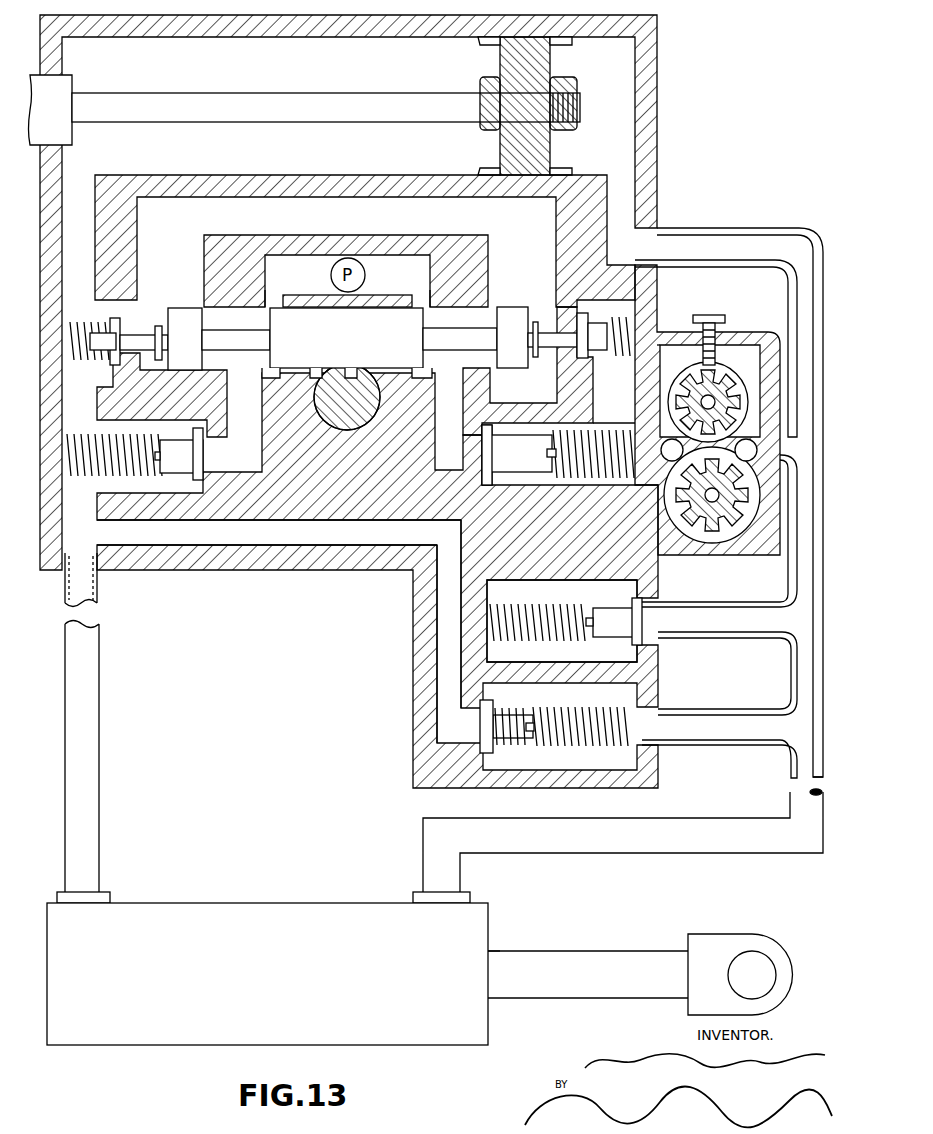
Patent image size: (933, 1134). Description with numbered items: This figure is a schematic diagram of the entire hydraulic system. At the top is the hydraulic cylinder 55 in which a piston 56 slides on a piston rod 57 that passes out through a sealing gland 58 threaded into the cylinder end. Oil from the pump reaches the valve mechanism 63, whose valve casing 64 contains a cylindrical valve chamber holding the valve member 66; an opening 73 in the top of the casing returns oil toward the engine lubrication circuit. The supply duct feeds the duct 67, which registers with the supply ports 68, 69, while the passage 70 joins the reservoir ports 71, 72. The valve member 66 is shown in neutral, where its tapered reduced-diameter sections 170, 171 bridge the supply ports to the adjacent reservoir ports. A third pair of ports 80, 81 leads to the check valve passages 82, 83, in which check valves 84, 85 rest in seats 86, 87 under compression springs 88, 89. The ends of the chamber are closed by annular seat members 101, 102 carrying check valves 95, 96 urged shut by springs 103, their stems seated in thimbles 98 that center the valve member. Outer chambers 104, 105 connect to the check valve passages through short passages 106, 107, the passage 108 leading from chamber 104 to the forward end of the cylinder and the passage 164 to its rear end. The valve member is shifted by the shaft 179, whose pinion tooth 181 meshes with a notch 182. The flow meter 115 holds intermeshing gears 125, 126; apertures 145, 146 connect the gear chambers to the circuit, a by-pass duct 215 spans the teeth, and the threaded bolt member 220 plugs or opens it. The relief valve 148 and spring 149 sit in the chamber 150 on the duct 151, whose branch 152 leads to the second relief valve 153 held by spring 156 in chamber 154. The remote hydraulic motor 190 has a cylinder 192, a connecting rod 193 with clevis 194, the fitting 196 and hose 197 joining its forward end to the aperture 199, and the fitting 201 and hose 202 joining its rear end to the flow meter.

The hydraulic cylinder 55 is at (305, 40).
The piston 56 is at (540, 62).
The piston rod 57 is at (233, 118).
The sealing gland 58 is at (66, 142).
The passage 108 is at (94, 222).
The passage 164 is at (609, 212).
The chamber 105 is at (635, 263).
The opening 73 is at (347, 215).
The passage 70 is at (365, 241).
The duct 67 is at (347, 285).
The port 68 is at (283, 297).
The port 69 is at (412, 297).
The port 80 is at (175, 395).
The shaft 179 is at (352, 422).
The port 81 is at (514, 371).
The valve casing 64 is at (268, 572).
The valve mechanism 63 is at (187, 583).
The duct 151 is at (267, 534).
The gear 126 is at (758, 345).
The gear 125 is at (700, 545).
The flow meter 115 is at (750, 545).
The aperture 145 is at (657, 451).
The aperture 146 is at (757, 450).
The threaded bolt member 220 is at (738, 308).
The by-pass duct 215 is at (684, 352).
The flexible hose 202 is at (614, 865).
The compression springs 103 is at (105, 320).
The chamber 104 is at (105, 305).
The check valve 95 is at (108, 366).
The thimble 98 is at (144, 356).
The valve seat 87 is at (140, 330).
The port 71 is at (182, 326).
The annular seat member 101 is at (143, 300).
The section of reduced diameter 170 is at (270, 349).
The valve member 66 is at (346, 338).
The notch 182 is at (320, 366).
The pinion tooth 181 is at (367, 355).
The section of reduced diameter 171 is at (484, 352).
The port 72 is at (512, 325).
The compression spring 88 is at (548, 318).
The annular seat member 102 is at (565, 298).
The check valve 96 is at (592, 365).
The short passage 107 is at (614, 403).
The compression spring 89 is at (630, 428).
The short passage 106 is at (79, 397).
The check valve passage 82 is at (114, 466).
The check valve 84 is at (205, 454).
The valve seat 86 is at (210, 437).
The check valve passage 83 is at (553, 445).
The check valve 85 is at (482, 449).
The check valve chamber 150 is at (562, 621).
The compression spring 149 is at (566, 644).
The check valve 148 is at (643, 623).
The branch 152 is at (446, 637).
The compression spring 156 is at (620, 750).
The valve chamber 154 is at (530, 760).
The excess pressure relief valve 153 is at (484, 735).
The aperture 199 is at (94, 578).
The flexible hose 197 is at (99, 800).
The fitting 196 is at (120, 890).
The fitting 201 is at (413, 896).
The cylinder 192 is at (267, 974).
The remote hydraulic motor 190 is at (509, 911).
The connecting rod 193 is at (592, 952).
The clevis 194 is at (735, 936).